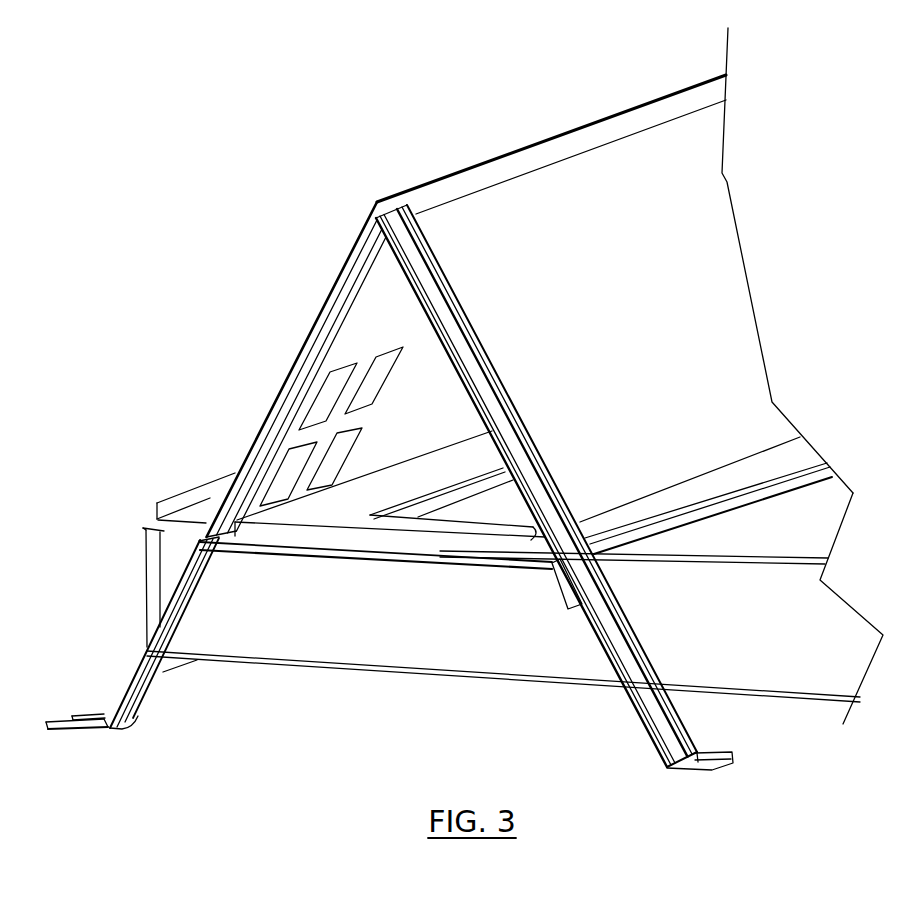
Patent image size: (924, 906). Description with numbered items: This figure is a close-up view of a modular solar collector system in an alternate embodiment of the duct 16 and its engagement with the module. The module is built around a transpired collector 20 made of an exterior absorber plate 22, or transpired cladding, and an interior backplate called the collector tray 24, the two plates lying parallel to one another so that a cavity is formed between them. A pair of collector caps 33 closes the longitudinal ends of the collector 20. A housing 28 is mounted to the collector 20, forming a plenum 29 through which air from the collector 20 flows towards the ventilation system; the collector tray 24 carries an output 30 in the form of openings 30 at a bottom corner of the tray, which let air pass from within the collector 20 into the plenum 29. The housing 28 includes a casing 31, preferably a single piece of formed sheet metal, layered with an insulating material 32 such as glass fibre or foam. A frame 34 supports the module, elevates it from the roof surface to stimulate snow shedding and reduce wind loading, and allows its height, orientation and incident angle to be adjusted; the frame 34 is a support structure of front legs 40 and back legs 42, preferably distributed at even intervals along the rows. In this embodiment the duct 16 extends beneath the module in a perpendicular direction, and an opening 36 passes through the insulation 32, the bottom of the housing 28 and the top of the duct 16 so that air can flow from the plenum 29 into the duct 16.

The duct 16 is at (762, 663).
The transpired collector 20 is at (427, 473).
The absorber plate 22 is at (282, 369).
The collector tray 24 is at (307, 420).
The housing 28 is at (619, 291).
The plenum 29 is at (431, 400).
The output 30 is at (283, 478).
The casing 31 is at (698, 227).
The insulating material 32 is at (318, 510).
The collector cap 33 is at (287, 393).
The frame 34 is at (130, 690).
The opening 36 is at (507, 502).
The front leg 40 is at (140, 652).
The back leg 42 is at (437, 323).